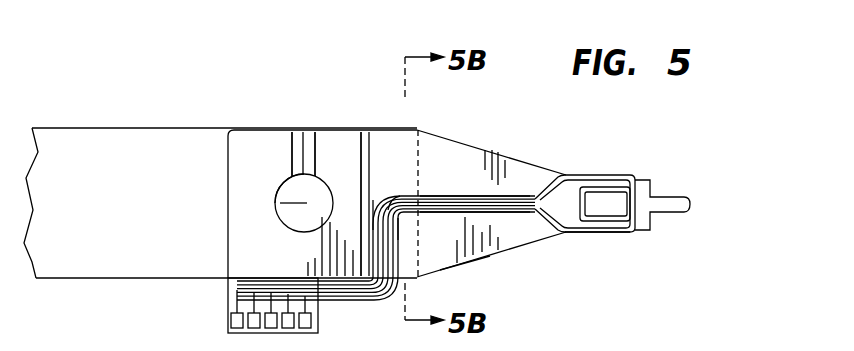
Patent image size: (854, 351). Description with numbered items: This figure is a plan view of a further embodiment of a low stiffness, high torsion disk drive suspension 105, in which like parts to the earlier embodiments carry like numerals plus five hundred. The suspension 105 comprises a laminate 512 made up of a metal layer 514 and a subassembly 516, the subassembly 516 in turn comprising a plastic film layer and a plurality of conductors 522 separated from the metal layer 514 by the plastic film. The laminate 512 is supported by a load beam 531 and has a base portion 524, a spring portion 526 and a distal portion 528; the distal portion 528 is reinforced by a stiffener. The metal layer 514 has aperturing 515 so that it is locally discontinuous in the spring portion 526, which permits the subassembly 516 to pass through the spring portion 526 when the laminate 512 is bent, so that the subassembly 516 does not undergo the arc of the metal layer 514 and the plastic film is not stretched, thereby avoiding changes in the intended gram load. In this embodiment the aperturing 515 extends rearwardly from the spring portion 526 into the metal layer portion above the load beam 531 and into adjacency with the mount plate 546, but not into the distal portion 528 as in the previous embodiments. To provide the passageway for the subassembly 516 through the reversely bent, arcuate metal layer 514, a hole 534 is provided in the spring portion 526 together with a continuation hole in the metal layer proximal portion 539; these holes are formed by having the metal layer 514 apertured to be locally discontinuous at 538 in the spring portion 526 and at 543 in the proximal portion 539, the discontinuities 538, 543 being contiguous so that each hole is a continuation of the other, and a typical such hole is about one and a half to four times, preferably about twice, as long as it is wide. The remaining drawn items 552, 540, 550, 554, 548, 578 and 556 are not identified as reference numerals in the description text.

The suspension 105 is at (27, 157).
The catheter body wall 552 is at (85, 138).
The mount plate 546 is at (242, 173).
The spring portion 526 is at (392, 128).
The laminate 512 is at (467, 173).
The conductors 522 is at (503, 214).
The load beam 531 is at (480, 266).
The circular aperture 540 is at (286, 216).
The discontinuity 543 is at (305, 204).
The aperture edge 550 is at (298, 181).
The conductor trace 554 is at (308, 182).
The conductor trace 548 is at (318, 178).
The hole 534 is at (365, 203).
The flexible ribbon cable 578 is at (345, 301).
The metal layer 514 is at (448, 213).
The aperturing 515 is at (407, 200).
The metal layer proximal portion 539 is at (385, 197).
The discontinuity 538 is at (394, 198).
The base portion 524 is at (232, 298).
The subassembly 516 is at (510, 187).
The distal portion 528 is at (593, 233).
The connector window 556 is at (612, 200).